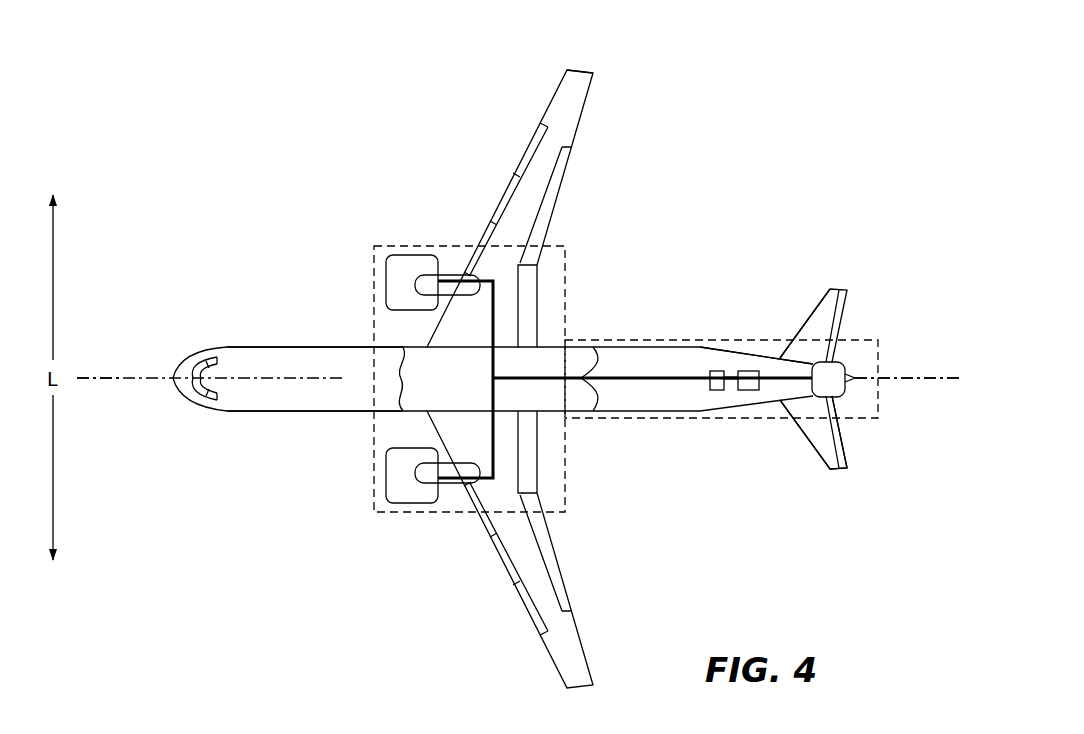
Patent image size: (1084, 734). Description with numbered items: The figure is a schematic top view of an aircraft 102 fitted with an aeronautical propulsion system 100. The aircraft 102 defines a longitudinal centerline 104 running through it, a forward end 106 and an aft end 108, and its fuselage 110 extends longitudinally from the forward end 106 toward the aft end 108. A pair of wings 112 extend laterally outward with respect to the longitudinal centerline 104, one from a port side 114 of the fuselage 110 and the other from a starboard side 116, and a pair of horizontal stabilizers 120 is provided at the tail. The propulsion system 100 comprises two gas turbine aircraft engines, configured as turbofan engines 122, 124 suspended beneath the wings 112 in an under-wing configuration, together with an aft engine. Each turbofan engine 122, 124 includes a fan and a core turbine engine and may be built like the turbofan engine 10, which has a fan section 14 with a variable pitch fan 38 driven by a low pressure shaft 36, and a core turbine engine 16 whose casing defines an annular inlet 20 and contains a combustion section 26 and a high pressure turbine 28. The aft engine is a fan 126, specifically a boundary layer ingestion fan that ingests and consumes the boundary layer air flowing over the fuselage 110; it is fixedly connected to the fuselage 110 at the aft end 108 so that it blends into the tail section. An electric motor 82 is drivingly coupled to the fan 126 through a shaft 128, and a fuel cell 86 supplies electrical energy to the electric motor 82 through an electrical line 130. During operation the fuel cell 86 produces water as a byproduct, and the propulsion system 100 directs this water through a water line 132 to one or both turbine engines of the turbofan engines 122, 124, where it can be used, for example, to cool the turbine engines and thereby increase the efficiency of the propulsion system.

The turbofan engine 10 is at (706, 168).
The fan section 14 is at (915, 380).
The core turbine engine 16 is at (178, 350).
The annular inlet 20 is at (542, 596).
The combustion section 26 is at (500, 557).
The high pressure turbine 28 is at (558, 562).
The low pressure shaft 36 is at (843, 306).
The variable pitch fan 38 is at (655, 388).
The electric motor 82 is at (749, 390).
The fuel cell 86 is at (715, 390).
The aeronautical propulsion system 100 is at (678, 338).
The aircraft 102 is at (212, 160).
The longitudinal centerline 104 is at (110, 378).
The forward end 106 is at (170, 388).
The aft end 108 is at (803, 465).
The fuselage 110 is at (217, 411).
The wings 112 is at (575, 103).
The port side 114 is at (310, 416).
The starboard side 116 is at (307, 340).
The horizontal stabilizers 120 is at (822, 310).
The turbofan engine 122 is at (398, 510).
The turbofan engine 124 is at (405, 268).
The fan 126 is at (836, 398).
The shaft 128 is at (778, 360).
The electrical line 130 is at (732, 373).
The water line 132 is at (633, 378).